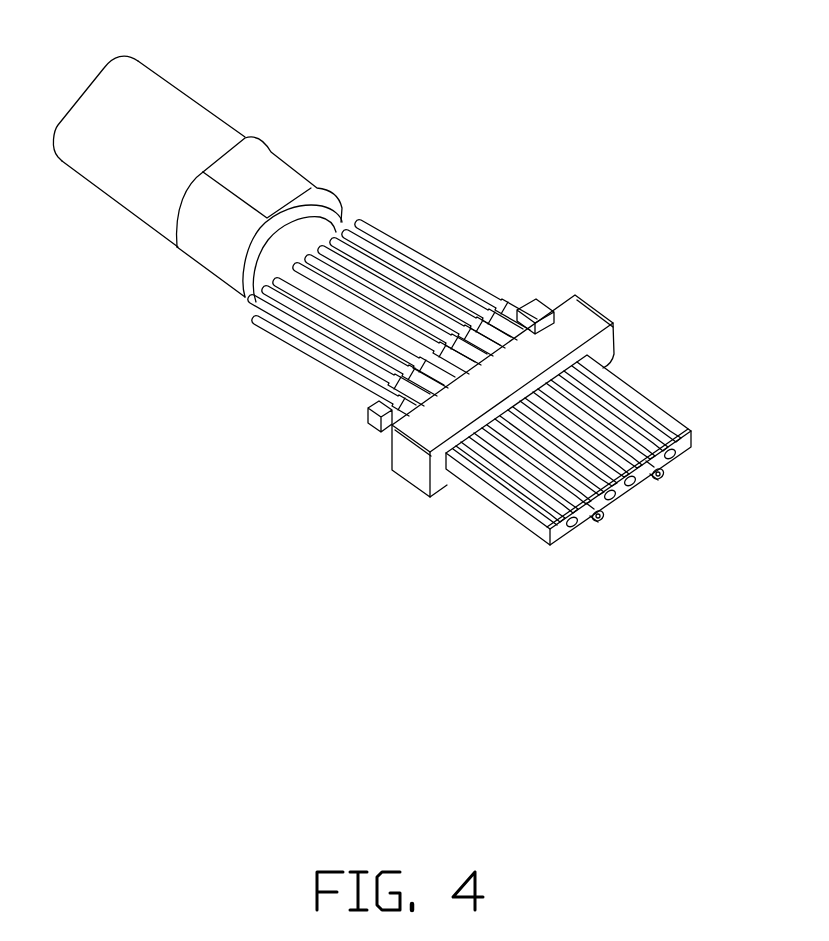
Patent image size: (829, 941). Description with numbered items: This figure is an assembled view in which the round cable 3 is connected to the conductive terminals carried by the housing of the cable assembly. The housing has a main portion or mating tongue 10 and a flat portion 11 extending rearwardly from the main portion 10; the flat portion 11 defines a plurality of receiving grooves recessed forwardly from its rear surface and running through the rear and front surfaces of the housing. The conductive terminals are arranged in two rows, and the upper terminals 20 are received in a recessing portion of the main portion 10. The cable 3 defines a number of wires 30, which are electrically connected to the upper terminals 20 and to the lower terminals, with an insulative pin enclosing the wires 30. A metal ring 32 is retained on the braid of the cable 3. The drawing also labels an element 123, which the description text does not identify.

The round cable 3 is at (173, 130).
The metal ring 32 is at (265, 188).
The wires 30 is at (410, 259).
The main portion 10 is at (597, 375).
The flat portion 11 is at (385, 424).
The upper terminals 20 is at (628, 420).
The positioning posts 123 is at (670, 482).